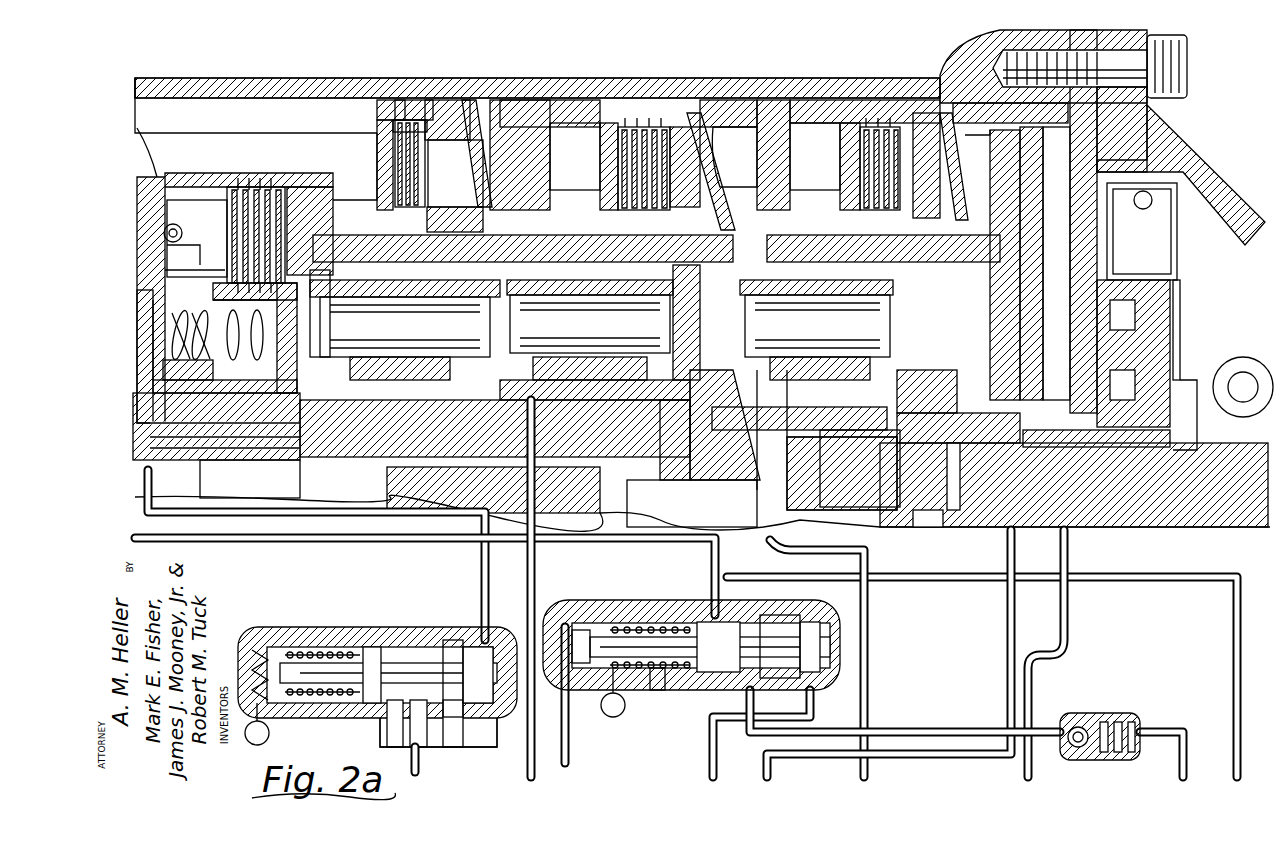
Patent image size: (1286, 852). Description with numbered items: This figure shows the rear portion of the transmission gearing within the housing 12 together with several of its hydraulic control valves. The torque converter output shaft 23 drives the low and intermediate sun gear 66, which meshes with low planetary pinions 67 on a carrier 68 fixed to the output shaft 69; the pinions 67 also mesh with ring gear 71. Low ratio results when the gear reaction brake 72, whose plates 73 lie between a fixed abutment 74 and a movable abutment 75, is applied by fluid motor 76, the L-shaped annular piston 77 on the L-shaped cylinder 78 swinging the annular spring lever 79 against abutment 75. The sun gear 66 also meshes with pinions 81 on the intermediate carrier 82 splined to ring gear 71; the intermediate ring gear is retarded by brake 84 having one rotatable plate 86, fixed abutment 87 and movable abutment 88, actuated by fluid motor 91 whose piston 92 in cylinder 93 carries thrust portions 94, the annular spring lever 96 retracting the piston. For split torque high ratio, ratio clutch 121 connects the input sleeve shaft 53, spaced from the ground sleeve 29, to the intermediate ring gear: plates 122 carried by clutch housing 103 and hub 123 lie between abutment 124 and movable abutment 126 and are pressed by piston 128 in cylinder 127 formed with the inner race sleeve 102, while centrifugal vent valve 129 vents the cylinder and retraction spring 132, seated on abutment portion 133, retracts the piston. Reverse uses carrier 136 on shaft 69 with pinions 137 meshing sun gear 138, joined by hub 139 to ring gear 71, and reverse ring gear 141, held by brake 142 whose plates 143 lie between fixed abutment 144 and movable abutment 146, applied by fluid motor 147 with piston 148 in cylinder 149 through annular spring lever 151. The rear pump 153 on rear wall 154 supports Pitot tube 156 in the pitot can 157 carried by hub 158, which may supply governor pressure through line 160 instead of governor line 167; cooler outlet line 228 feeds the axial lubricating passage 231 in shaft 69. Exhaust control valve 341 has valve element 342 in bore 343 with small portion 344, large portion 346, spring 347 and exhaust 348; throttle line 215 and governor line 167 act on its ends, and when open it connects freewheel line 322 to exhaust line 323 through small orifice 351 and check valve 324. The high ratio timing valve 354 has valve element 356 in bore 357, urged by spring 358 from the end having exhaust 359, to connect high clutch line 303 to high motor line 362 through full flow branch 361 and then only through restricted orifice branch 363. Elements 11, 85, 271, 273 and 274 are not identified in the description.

The transmission housing 11 is at (584, 72).
The housing 12 is at (262, 80).
The torque converter output shaft 23 is at (320, 485).
The ground sleeve 29 is at (145, 445).
The sleeve shaft 53 is at (230, 462).
The low and intermediate sun gear 66 is at (355, 440).
The low planetary pinions 67 is at (590, 298).
The carrier 68 is at (660, 352).
The output shaft 69 is at (930, 518).
The ring gear 71 is at (580, 245).
The ratio engaging connecting device 72 is at (632, 104).
The plates 73 is at (645, 125).
The fixed abutment 74 is at (608, 130).
The movable abutment 75 is at (680, 120).
The fluid motor 76 is at (775, 108).
The L-shaped annular piston 77 is at (760, 185).
The L-shaped cylinder 78 is at (777, 130).
The annular spring lever 79 is at (720, 125).
The pinions 81 is at (410, 302).
The intermediate carrier 82 is at (462, 302).
The ratio engaging connecting device 84 is at (404, 107).
The hub 85 is at (448, 232).
The rotatable plate 86 is at (390, 160).
The fixed abutment 87 is at (376, 145).
The movable abutment 88 is at (430, 112).
The fluid motor 91 is at (508, 100).
The L-shaped annular piston 92 is at (520, 122).
The cylinder 93 is at (575, 140).
The thrust portions 94 is at (480, 150).
The annular spring lever 96 is at (472, 178).
The inner race sleeve 102 is at (140, 368).
The clutch housing 103 is at (165, 180).
The ratio clutch 121 is at (257, 178).
The plates 122 is at (268, 193).
The hub 123 is at (332, 300).
The abutment 124 is at (300, 235).
The movable abutment 126 is at (236, 193).
The cylinder 127 is at (165, 282).
The piston 128 is at (178, 250).
The centrifugal type vent valve 129 is at (165, 228).
The retraction spring 132 is at (175, 333).
The abutment portion 133 is at (282, 352).
The carrier 136 is at (893, 308).
The planetary pinions 137 is at (825, 302).
The sun gear 138 is at (735, 432).
The hub 139 is at (700, 313).
The reverse ring gear 141 is at (818, 245).
The ratio engaging connecting device 142 is at (879, 104).
The plates 143 is at (882, 135).
The fixed abutment 144 is at (848, 135).
The movable abutment 146 is at (952, 140).
The fluid motor 147 is at (1042, 170).
The piston 148 is at (1032, 200).
The cylinder 149 is at (1032, 230).
The annular spring lever 151 is at (1000, 165).
The rear pump 153 is at (1160, 335).
The rear wall 154 is at (1075, 260).
The Pitot tube 156 is at (1150, 202).
The pitot can 157 is at (1190, 160).
The hub 158 is at (1183, 290).
The line 160 is at (1062, 295).
The governor line 167 is at (708, 770).
The throttle line 215 is at (570, 755).
The cooler outlet line 228 is at (1070, 565).
The axial lubricating passage 231 is at (868, 520).
The conduit 271 is at (1015, 560).
The conduit 273 is at (540, 540).
The conduit 274 is at (778, 548).
The high clutch line 303 is at (422, 762).
The intermediate free-wheel drive line 322 is at (215, 545).
The freewheel exhaust line 323 is at (748, 732).
The check valve 324 is at (1098, 713).
The exhaust control valve 341 is at (654, 698).
The valve element 342 is at (665, 640).
The bore 343 is at (632, 625).
The small diameter portion 344 is at (578, 640).
The large diameter portion 346 is at (790, 630).
The spring 347 is at (662, 692).
The exhaust 348 is at (614, 718).
The small orifice 351 is at (1078, 727).
The high ratio timing valve 354 is at (364, 617).
The valve element 356 is at (400, 660).
The bore 357 is at (268, 640).
The spring 358 is at (322, 652).
The exhaust 359 is at (272, 730).
The full flow branch 361 is at (452, 732).
The high motor line 362 is at (145, 513).
The restricted orifice branch 363 is at (378, 738).